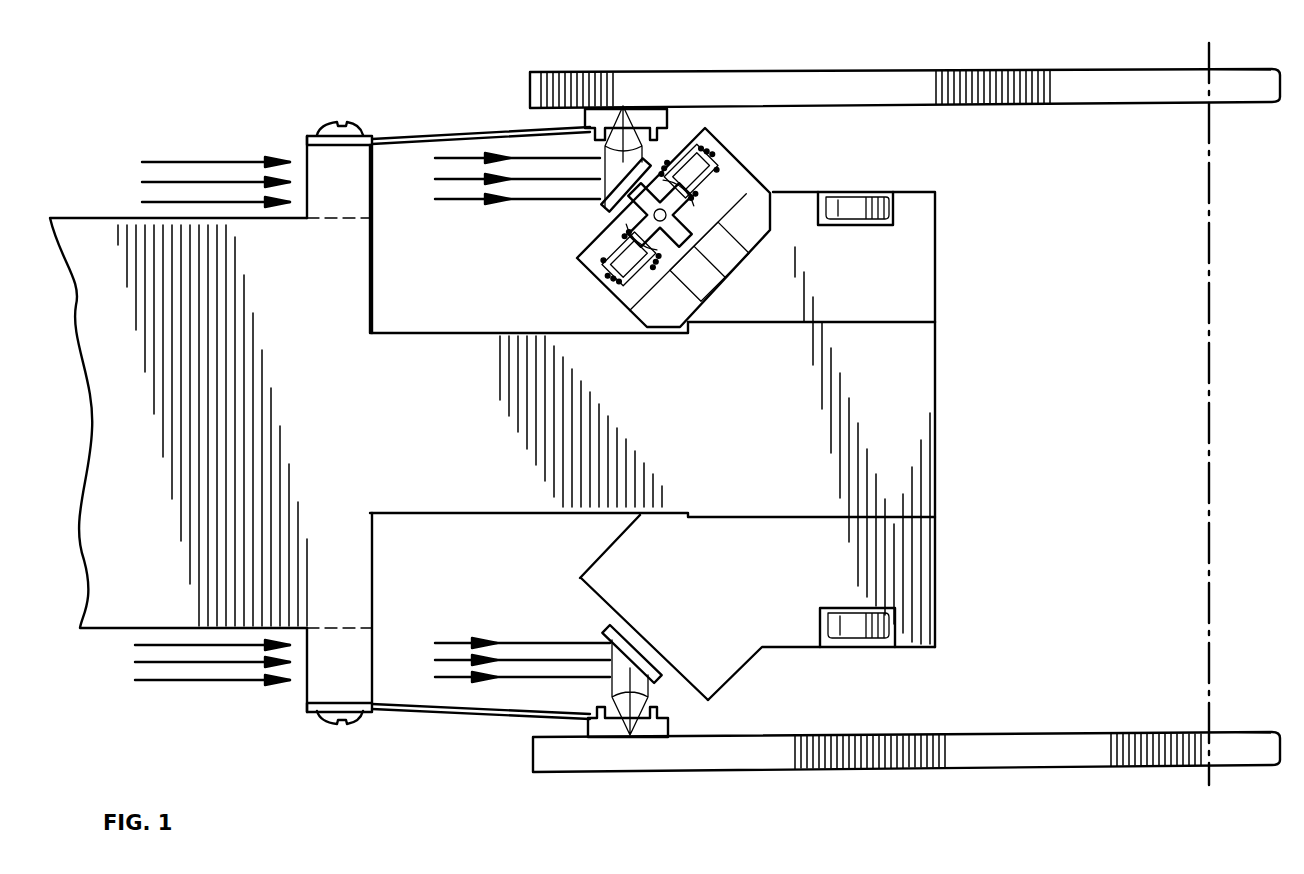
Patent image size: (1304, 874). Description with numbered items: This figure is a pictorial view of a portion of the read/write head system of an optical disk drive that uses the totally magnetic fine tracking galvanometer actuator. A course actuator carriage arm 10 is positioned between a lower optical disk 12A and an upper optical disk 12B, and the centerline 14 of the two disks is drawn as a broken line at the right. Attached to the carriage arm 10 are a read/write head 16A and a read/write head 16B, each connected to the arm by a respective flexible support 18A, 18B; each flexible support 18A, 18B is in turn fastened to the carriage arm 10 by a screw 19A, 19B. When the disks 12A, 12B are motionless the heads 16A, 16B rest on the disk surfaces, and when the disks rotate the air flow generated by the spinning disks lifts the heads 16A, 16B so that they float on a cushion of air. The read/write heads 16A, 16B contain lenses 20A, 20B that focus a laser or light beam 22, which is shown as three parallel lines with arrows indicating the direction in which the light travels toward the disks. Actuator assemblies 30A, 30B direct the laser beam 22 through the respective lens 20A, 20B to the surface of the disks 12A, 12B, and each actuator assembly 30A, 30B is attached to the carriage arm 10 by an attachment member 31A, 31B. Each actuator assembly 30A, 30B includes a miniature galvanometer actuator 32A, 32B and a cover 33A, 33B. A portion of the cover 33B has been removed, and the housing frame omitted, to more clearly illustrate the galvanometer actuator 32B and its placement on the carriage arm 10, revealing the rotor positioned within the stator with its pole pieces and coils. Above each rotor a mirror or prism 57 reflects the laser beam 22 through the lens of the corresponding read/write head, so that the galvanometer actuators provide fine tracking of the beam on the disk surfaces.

The course actuator carriage arm 10 is at (118, 617).
The optical disk 12A is at (997, 753).
The optical disk 12B is at (1050, 70).
The centerline 14 is at (1212, 585).
The read/write head 16A is at (675, 720).
The read/write head 16B is at (670, 120).
The flexible support 18A is at (433, 713).
The flexible support 18B is at (423, 138).
The screw 19A is at (325, 727).
The screw 19B is at (350, 123).
The lens 20A is at (575, 700).
The lens 20B is at (514, 133).
The laser or light beam 22 is at (222, 160).
The actuator assembly 30A is at (742, 673).
The actuator assembly 30B is at (800, 187).
The attachment member 31A is at (868, 635).
The attachment member 31B is at (865, 195).
The miniature galvanometer actuator 32A is at (662, 668).
The miniature galvanometer actuator 32B is at (604, 288).
The cover 33A is at (920, 566).
The cover 33B is at (910, 288).
The mirror or prism 57 is at (603, 205).